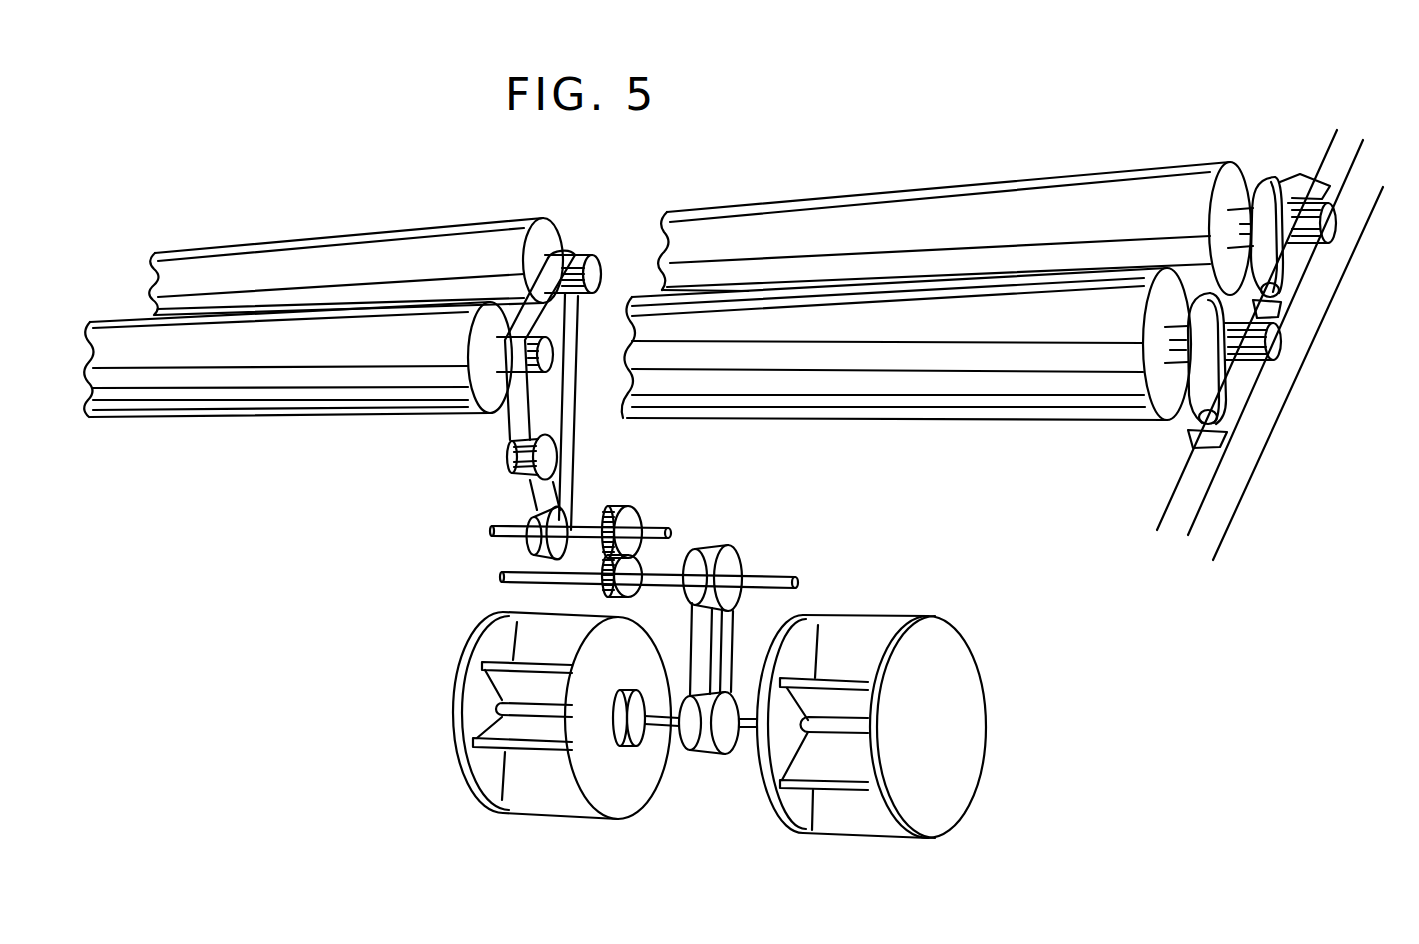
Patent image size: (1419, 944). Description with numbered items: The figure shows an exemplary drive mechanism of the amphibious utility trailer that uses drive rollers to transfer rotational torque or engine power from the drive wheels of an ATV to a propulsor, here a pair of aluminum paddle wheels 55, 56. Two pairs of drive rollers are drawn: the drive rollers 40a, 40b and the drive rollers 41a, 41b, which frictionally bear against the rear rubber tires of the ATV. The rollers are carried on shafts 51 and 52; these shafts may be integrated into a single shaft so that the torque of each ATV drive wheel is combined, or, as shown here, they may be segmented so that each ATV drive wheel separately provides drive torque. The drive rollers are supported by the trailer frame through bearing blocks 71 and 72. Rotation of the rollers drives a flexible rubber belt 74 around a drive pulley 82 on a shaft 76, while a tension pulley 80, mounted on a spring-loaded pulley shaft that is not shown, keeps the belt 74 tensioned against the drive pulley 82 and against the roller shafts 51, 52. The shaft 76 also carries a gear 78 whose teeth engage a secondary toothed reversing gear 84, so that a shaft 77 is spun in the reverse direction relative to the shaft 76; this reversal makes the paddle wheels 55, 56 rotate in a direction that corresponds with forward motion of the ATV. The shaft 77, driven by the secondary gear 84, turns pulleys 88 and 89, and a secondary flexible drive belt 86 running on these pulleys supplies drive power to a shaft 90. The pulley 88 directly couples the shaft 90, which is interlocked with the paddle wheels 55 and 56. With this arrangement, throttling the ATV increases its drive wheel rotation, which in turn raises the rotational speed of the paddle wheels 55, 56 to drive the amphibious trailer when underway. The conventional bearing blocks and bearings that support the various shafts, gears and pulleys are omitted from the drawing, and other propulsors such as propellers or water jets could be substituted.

The drive roller 41a is at (301, 240).
The drive roller 41b is at (958, 186).
The drive roller 40a is at (314, 407).
The drive roller 40b is at (1020, 407).
The shaft 51 is at (598, 262).
The shaft 52 is at (548, 357).
The flexible belt 74 is at (576, 333).
The bearing block 72 is at (1292, 190).
The bearing block 71 is at (1203, 390).
The tension pulley 80 is at (510, 458).
The shaft 76 is at (495, 528).
The drive pulley 82 is at (530, 553).
The gear 78 is at (636, 516).
The reversing gear 84 is at (612, 590).
The shaft 77 is at (792, 578).
The pulley 89 is at (734, 560).
The secondary flexible drive belt 86 is at (698, 638).
The pulley 88 is at (727, 755).
The shaft 90 is at (667, 732).
The paddle wheel 55 is at (462, 690).
The paddle wheel 56 is at (970, 675).